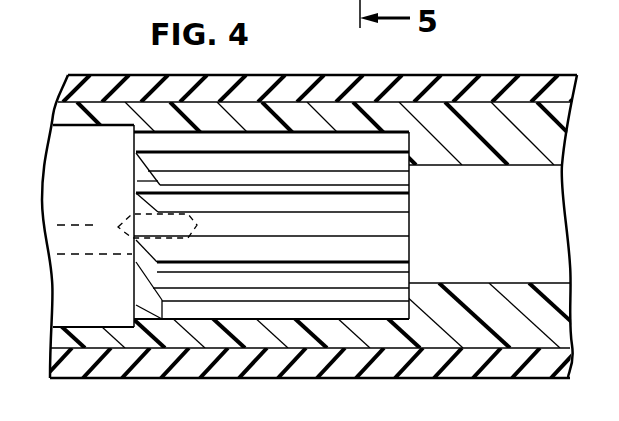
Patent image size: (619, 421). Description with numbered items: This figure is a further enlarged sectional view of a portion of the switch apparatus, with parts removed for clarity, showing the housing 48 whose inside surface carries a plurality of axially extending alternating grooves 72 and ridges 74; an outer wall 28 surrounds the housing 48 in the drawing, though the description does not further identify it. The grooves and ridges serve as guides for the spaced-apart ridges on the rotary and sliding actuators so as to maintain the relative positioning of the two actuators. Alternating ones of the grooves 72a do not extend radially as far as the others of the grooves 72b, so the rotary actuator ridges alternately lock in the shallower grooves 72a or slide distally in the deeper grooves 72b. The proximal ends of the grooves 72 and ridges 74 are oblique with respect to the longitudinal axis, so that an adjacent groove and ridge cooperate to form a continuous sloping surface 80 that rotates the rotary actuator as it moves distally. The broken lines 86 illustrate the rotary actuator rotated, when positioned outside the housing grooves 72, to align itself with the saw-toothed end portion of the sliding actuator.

The housing wall 28 is at (510, 74).
The housing 48 is at (553, 140).
The grooves 72 is at (400, 232).
The grooves 72a is at (170, 277).
The grooves 72b is at (210, 227).
The ridges 74 is at (398, 254).
The continuous sloping surface 80 is at (147, 265).
The broken lines 86 is at (118, 227).